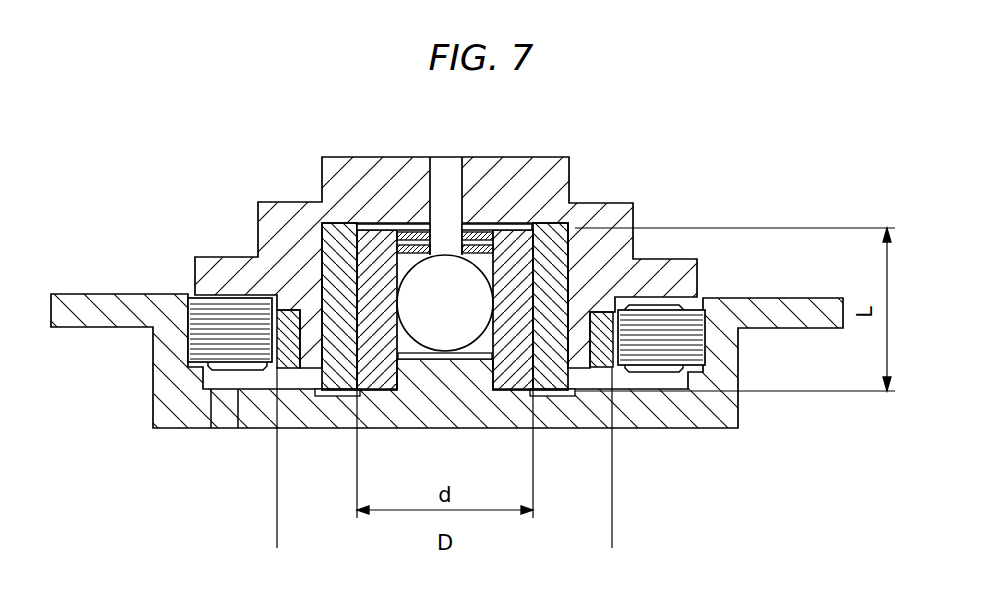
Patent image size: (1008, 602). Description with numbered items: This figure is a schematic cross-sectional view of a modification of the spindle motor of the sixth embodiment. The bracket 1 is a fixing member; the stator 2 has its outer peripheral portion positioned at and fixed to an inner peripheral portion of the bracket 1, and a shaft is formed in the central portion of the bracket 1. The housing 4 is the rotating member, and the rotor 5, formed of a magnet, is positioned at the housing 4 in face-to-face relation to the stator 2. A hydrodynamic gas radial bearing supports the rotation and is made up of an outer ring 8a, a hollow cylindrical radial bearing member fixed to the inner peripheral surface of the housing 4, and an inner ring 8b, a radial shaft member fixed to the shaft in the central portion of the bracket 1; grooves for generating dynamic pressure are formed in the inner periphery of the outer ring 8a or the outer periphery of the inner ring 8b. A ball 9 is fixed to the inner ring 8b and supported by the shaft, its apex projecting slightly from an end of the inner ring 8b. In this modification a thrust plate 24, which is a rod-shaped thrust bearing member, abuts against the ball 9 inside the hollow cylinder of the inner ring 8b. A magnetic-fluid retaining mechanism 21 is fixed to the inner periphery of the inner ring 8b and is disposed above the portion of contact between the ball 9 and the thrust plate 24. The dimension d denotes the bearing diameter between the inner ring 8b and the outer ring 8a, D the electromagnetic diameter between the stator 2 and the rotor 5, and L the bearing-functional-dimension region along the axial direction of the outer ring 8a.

The bracket 1 is at (788, 322).
The stator 2 is at (218, 352).
The housing 4 is at (516, 168).
The rotor 5 is at (295, 348).
The outer ring 8a is at (343, 372).
The inner ring 8b is at (382, 373).
The ball 9 is at (415, 313).
The magnetic-fluid retaining mechanism 21 is at (407, 235).
The thrust plate 24 is at (447, 170).